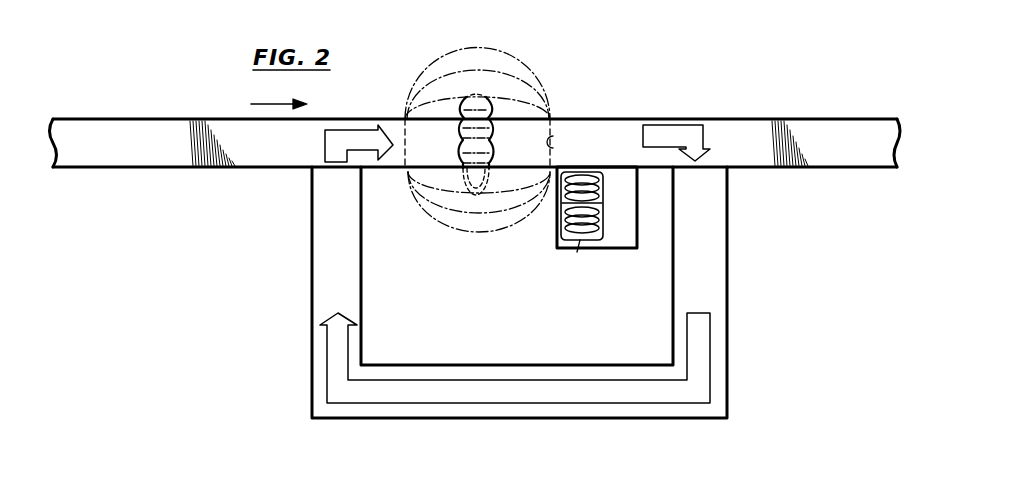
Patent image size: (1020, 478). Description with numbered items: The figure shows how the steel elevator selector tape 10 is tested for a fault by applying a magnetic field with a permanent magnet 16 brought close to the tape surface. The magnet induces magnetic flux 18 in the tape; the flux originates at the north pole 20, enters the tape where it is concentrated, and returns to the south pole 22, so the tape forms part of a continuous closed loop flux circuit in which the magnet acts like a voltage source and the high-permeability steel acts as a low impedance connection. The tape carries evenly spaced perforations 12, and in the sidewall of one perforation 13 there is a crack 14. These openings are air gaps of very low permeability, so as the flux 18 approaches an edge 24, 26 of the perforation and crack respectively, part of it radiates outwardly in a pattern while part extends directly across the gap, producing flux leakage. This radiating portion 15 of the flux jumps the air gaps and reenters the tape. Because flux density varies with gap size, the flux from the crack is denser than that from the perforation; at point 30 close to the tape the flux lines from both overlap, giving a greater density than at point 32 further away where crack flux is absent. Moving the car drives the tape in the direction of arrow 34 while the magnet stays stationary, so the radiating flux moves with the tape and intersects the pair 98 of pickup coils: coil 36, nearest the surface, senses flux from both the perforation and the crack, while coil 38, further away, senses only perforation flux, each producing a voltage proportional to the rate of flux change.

The selector tape 10 is at (168, 152).
The perforations 12 is at (586, 143).
The perforation 13 is at (556, 142).
The crack 14 is at (462, 148).
The portion of the flux 15 is at (480, 49).
The permanent magnet 16 is at (303, 378).
The magnetic flux 18 is at (324, 147).
The north pole 20 is at (311, 185).
The south pole 22 is at (728, 183).
The edge of the perforation 24 is at (405, 119).
The edge of the crack 26 is at (489, 132).
The point 30 is at (477, 194).
The point 32 is at (497, 215).
The arrow 34 is at (257, 102).
The coil 36 is at (567, 203).
The coil 38 is at (577, 252).
The pair of coils 98 is at (635, 203).